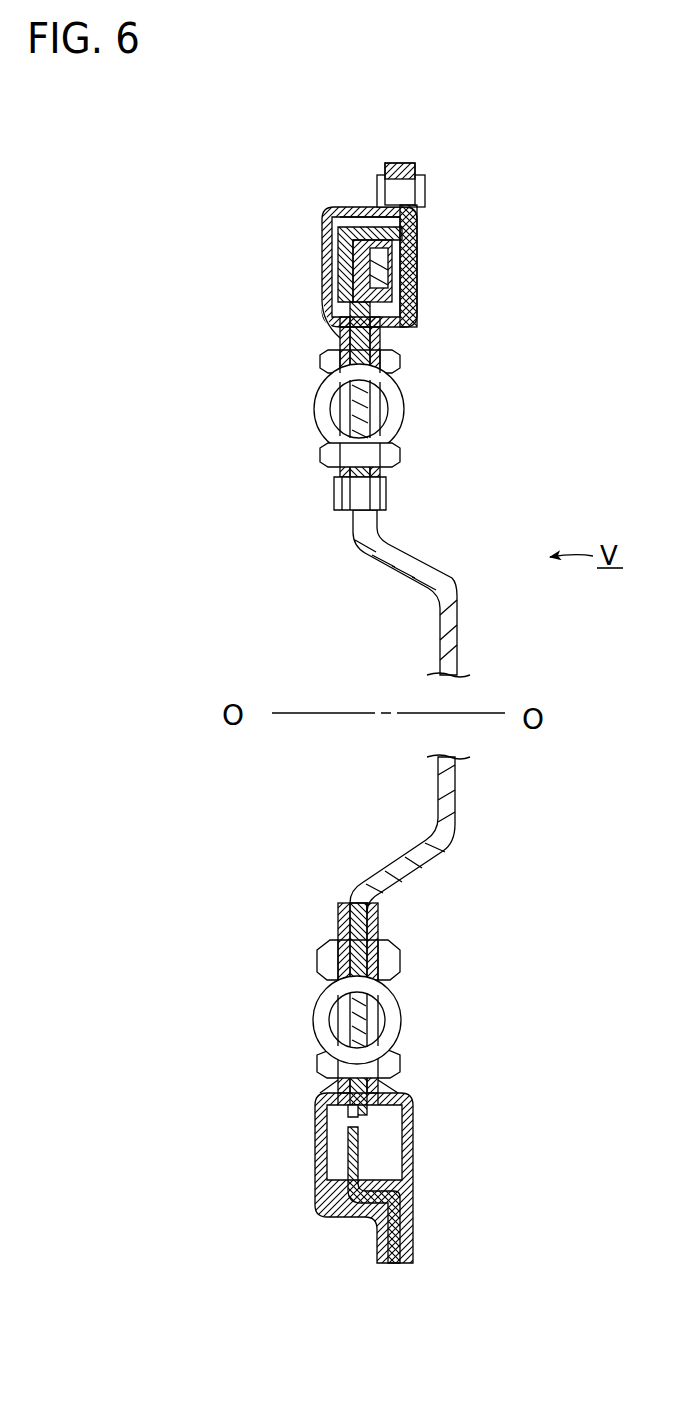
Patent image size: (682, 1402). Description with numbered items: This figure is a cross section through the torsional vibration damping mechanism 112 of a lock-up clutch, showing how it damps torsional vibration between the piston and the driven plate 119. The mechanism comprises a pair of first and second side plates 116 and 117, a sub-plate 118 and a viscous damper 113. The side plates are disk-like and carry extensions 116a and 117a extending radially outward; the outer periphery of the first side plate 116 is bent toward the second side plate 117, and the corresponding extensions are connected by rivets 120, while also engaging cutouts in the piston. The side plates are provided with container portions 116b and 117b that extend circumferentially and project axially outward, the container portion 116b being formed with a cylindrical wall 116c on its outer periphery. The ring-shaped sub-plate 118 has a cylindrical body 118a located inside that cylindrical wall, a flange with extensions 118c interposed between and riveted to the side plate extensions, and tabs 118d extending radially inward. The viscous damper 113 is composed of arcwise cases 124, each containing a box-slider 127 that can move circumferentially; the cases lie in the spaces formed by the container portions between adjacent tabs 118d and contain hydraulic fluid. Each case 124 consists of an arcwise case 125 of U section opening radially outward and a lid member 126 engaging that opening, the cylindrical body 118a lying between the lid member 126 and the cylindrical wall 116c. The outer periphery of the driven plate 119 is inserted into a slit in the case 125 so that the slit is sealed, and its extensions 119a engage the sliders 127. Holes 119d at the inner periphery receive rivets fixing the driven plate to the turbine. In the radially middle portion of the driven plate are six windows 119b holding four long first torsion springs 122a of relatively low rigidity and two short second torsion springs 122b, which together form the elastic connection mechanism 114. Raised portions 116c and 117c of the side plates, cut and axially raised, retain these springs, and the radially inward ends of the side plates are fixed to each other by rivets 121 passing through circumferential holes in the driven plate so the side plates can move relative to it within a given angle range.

The torsional vibration damping mechanism 112 is at (520, 333).
The viscous damper 113 is at (308, 258).
The elastic connection mechanism 114 is at (300, 437).
The first side plate 116 is at (320, 312).
The extensions 116a is at (385, 1250).
The container portion 116b is at (323, 238).
The cylindrical wall 116c is at (357, 210).
The second side plate 117 is at (420, 275).
The extensions 117a is at (405, 1252).
The container portion 117b is at (415, 250).
The raised portion 117c is at (398, 355).
The sub-plate 118 is at (365, 1170).
The cylindrical body 118a is at (340, 212).
The extensions 118c is at (410, 1245).
The tabs 118d is at (347, 1155).
The driven plate 119 is at (390, 552).
The extensions 119a is at (323, 282).
The windows 119b is at (330, 383).
The holes 119d is at (457, 620).
The rivets 120 is at (410, 190).
The rivets 121 is at (397, 497).
The first torsion springs 122a is at (392, 1017).
The second torsion springs 122b is at (390, 415).
The case 124 is at (382, 1126).
The arcwise case 125 is at (413, 310).
The lid member 126 is at (373, 208).
The box-slider 127 is at (413, 290).